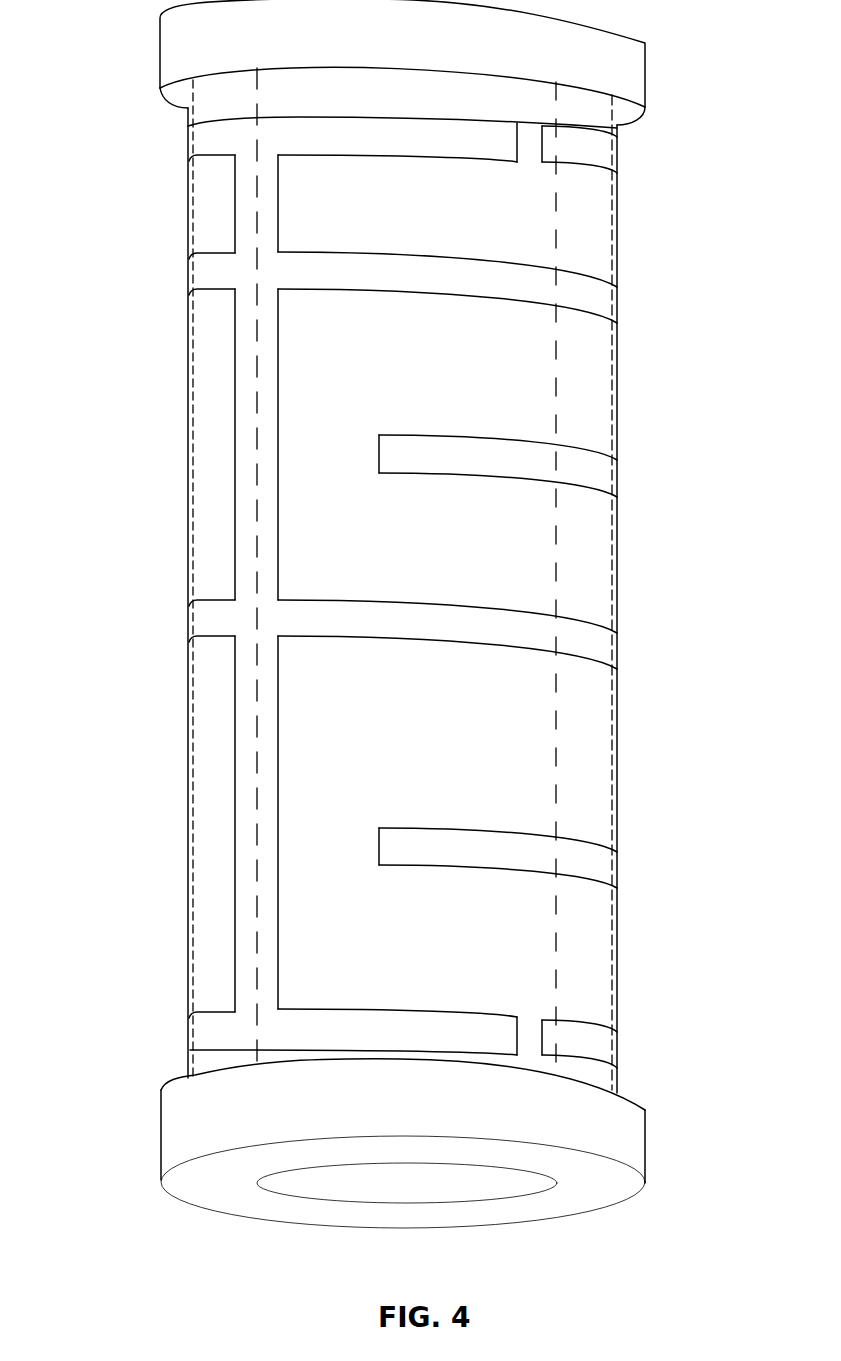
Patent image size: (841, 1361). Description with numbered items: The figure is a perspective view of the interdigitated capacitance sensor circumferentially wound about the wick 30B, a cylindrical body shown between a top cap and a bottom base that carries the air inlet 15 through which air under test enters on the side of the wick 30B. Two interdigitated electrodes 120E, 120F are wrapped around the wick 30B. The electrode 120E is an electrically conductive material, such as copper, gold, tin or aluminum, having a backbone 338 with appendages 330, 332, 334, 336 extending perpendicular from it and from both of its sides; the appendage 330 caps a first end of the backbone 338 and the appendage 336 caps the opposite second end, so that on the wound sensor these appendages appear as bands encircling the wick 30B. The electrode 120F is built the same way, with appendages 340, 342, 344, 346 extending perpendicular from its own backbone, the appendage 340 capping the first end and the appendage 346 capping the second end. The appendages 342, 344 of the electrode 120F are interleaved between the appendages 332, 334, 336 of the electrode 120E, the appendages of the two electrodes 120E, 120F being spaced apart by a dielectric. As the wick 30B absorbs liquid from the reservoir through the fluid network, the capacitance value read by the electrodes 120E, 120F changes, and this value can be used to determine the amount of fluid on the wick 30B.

The air inlet 15 is at (425, 1187).
The wick 30B is at (205, 381).
The electrode 120E is at (160, 139).
The electrode 120F is at (640, 151).
The appendage 330 is at (444, 158).
The appendage 332 is at (503, 299).
The appendage 334 is at (507, 647).
The appendage 336 is at (472, 1018).
The backbone 338 is at (283, 203).
The appendage 340 is at (552, 162).
The appendage 342 is at (512, 476).
The appendage 344 is at (507, 868).
The appendage 346 is at (552, 1020).